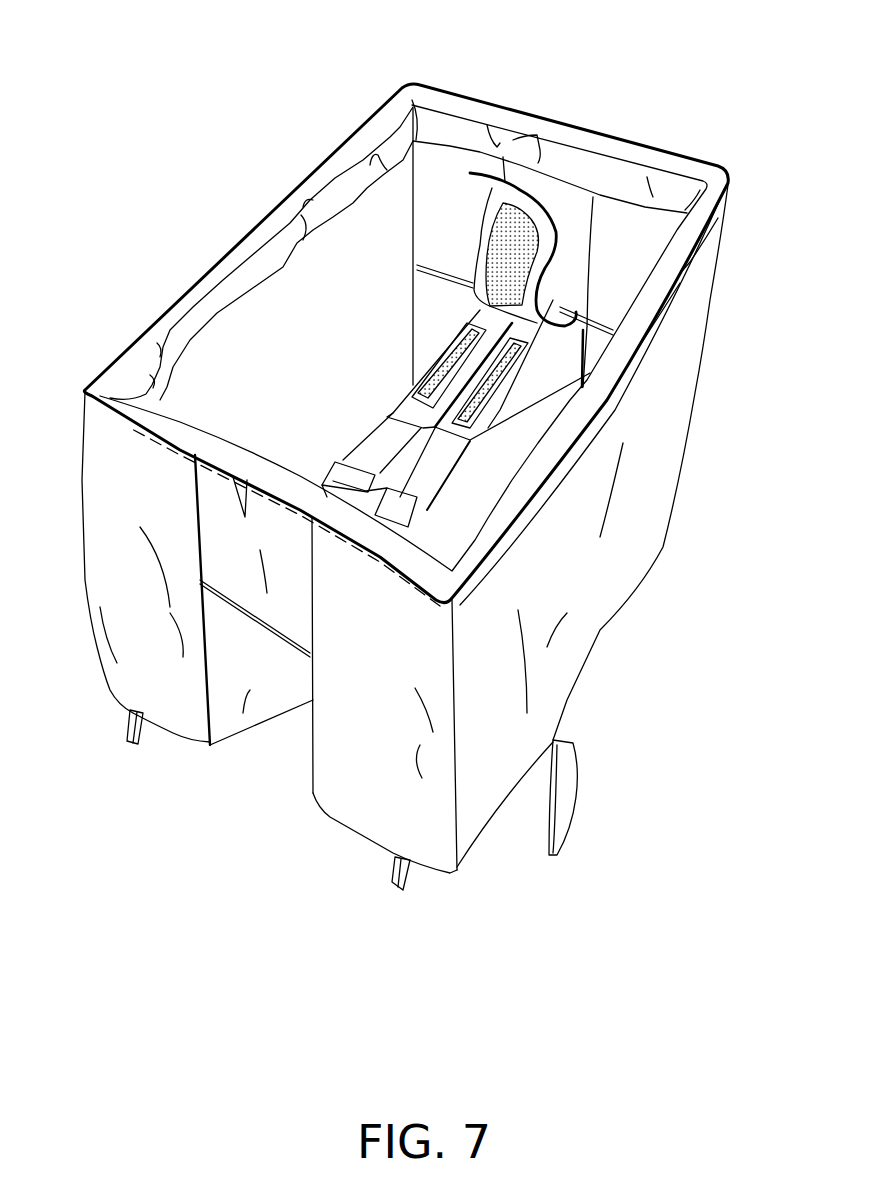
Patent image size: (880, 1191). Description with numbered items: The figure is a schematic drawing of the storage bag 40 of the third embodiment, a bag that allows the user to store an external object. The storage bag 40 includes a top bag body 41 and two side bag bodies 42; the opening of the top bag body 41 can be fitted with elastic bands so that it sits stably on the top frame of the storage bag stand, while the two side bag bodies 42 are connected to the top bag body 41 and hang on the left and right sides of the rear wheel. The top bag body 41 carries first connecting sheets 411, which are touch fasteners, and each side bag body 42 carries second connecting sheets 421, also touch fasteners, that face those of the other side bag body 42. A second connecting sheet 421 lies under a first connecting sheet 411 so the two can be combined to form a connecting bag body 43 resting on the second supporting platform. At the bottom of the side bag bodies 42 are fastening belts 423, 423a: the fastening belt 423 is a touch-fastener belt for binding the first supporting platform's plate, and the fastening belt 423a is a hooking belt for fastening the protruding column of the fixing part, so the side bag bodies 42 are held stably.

The storage bag 40 is at (104, 98).
The top bag body 41 is at (536, 138).
The first connecting sheet 411 is at (497, 255).
The side bag body 42 is at (643, 468).
The second connecting sheet 421 is at (427, 390).
The connecting bag body 43 is at (318, 452).
The fastening belt 423 is at (566, 817).
The fastening belt 423a is at (130, 744).